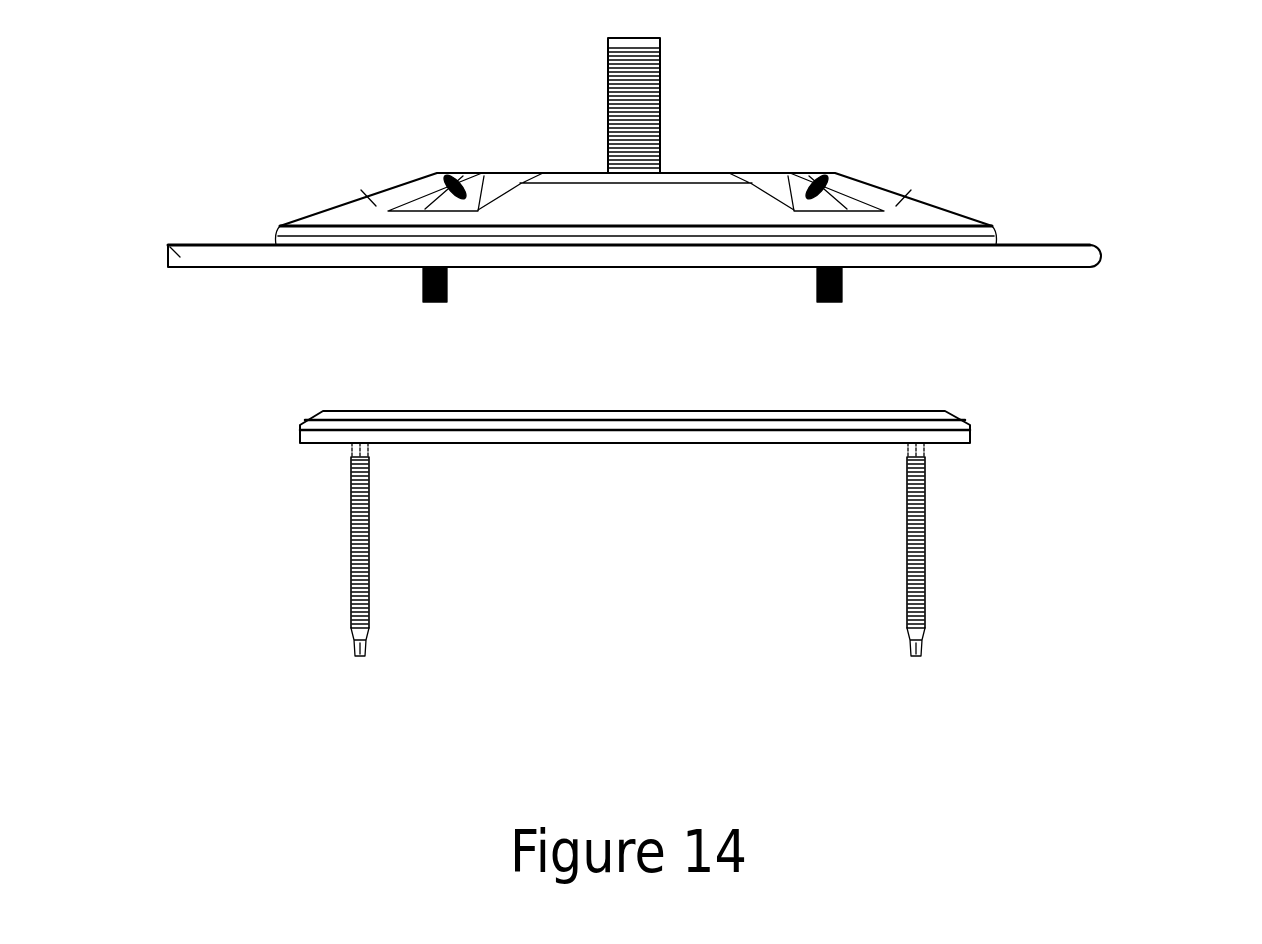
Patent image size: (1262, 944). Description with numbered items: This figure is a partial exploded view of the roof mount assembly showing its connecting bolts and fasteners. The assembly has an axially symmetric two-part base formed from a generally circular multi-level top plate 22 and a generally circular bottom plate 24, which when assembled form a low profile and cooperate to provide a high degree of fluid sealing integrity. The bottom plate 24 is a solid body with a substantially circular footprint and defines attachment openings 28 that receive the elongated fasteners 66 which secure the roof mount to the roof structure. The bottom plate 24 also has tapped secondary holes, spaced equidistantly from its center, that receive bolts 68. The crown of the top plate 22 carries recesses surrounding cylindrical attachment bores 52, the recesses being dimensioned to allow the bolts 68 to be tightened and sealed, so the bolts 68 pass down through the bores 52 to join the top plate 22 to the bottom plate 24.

The top plate 22 is at (1053, 245).
The bottom plate 24 is at (967, 428).
The attachment openings 28 is at (312, 418).
The cylindrical attachment bores 52 is at (437, 177).
The elongated fasteners 66 is at (369, 590).
The bolt 68 is at (448, 295).